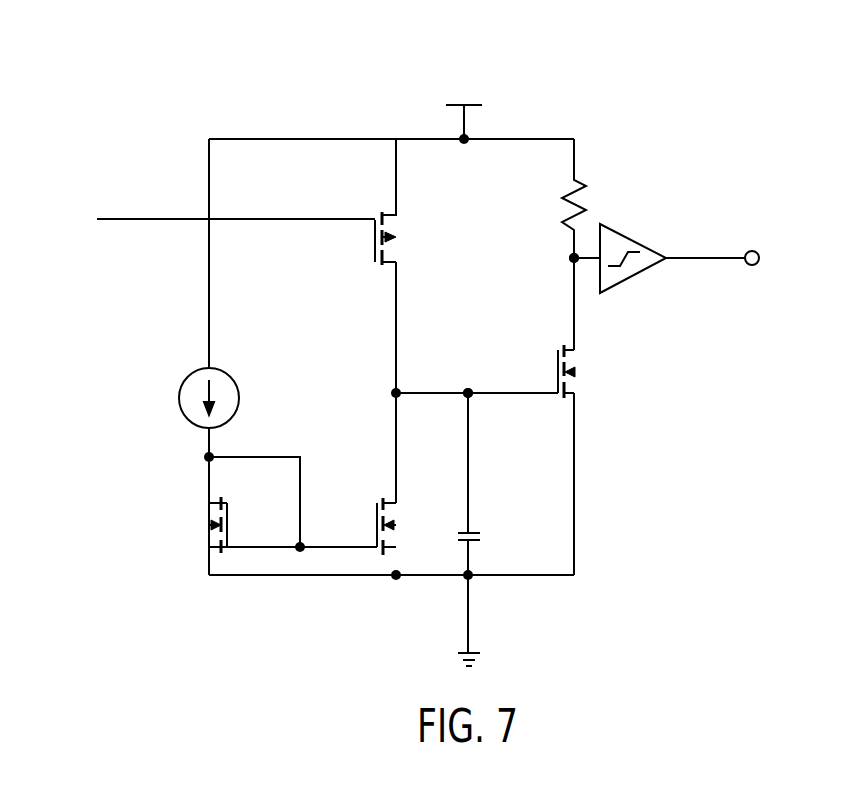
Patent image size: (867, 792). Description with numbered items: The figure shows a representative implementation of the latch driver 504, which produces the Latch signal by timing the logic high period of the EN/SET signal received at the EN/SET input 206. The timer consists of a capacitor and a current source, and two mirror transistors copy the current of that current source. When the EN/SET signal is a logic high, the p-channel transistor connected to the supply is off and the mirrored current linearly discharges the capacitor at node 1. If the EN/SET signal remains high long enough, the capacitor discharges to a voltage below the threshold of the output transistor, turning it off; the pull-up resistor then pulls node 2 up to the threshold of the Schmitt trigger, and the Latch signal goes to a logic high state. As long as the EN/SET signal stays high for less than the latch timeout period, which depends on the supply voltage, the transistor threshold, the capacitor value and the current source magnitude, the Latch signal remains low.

The latch driver circuit 504 is at (713, 84).
The EN/SET input 206 is at (203, 206).
The node 1 is at (468, 375).
The node "2" 2 is at (567, 257).